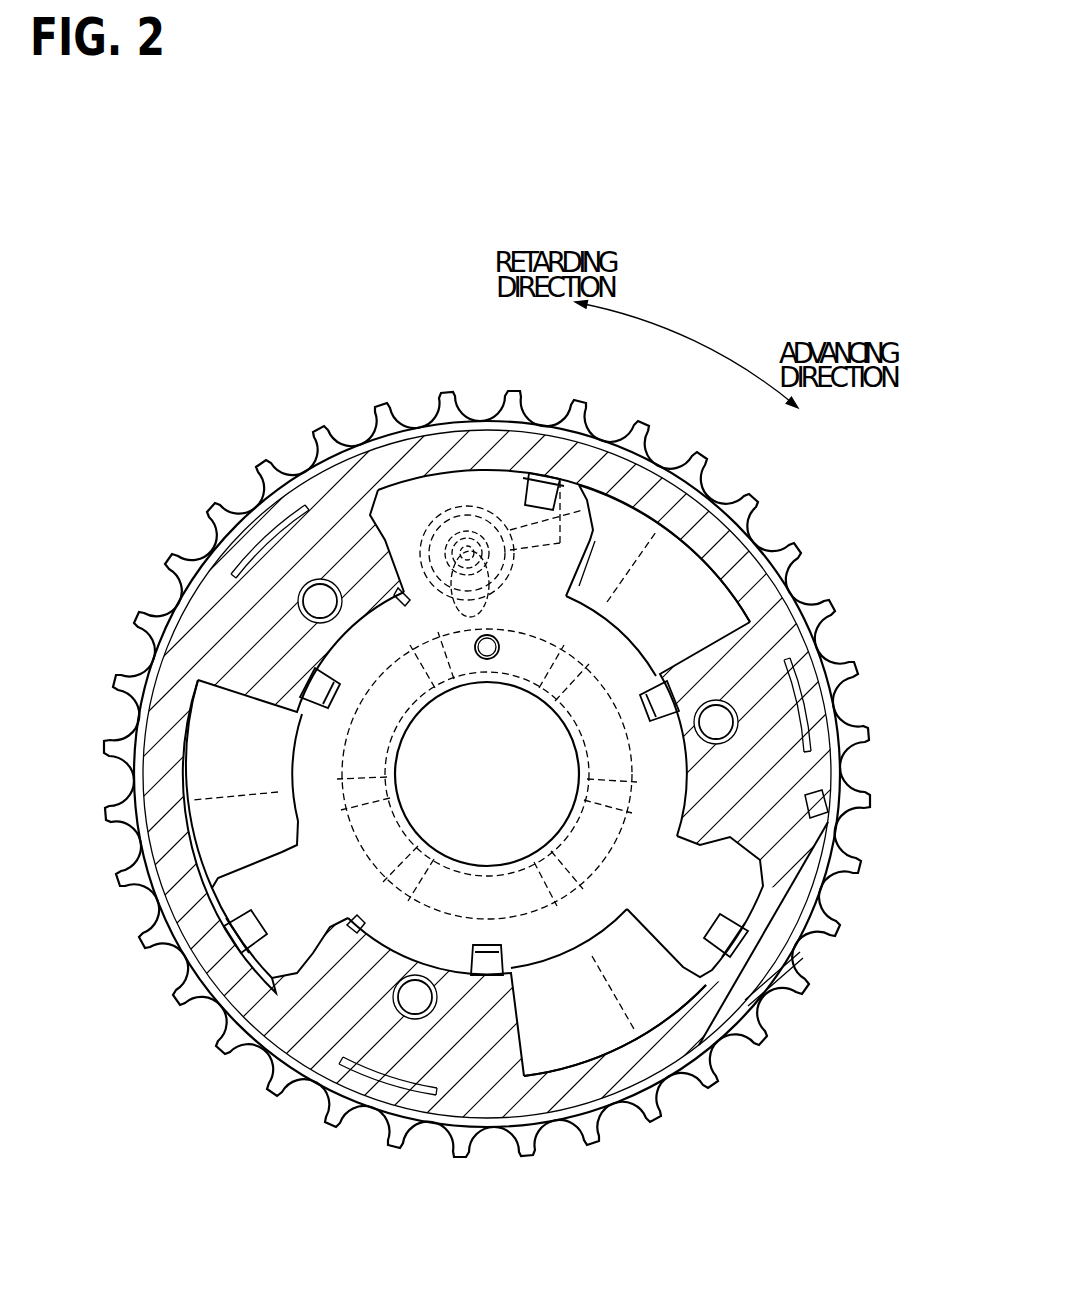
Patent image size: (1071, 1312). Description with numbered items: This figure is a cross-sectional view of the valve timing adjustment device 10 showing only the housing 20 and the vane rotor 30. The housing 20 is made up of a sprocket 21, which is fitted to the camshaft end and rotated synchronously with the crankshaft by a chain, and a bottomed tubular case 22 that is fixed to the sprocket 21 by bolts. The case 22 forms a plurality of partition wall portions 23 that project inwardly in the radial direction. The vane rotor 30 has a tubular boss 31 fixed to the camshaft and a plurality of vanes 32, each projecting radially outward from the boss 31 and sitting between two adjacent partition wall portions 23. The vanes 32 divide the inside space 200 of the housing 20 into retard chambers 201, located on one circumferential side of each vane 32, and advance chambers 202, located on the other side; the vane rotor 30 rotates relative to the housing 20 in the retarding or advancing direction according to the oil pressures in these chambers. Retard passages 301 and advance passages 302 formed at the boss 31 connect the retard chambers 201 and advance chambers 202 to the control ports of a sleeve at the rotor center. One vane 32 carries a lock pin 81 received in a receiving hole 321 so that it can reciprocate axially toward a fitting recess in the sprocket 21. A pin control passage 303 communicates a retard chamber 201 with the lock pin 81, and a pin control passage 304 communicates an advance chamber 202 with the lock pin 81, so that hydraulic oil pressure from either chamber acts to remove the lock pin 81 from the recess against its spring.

The valve timing adjustment device 10 is at (213, 493).
The housing 20 is at (355, 342).
The sprocket 21 is at (377, 510).
The case 22 is at (440, 447).
The partition wall portions 23 is at (293, 643).
The vane rotor 30 is at (277, 727).
The boss 31 is at (300, 752).
The vanes 32 is at (503, 487).
The lock pin 81 is at (463, 510).
The inside space 200 is at (700, 612).
The retard chambers 201 is at (657, 570).
The advance chambers 202 is at (370, 500).
The retard passages 301 is at (615, 535).
The advance passages 302 is at (333, 597).
The pin control passage 303 is at (562, 545).
The pin control passage 304 is at (430, 565).
The receiving hole 321 is at (440, 530).